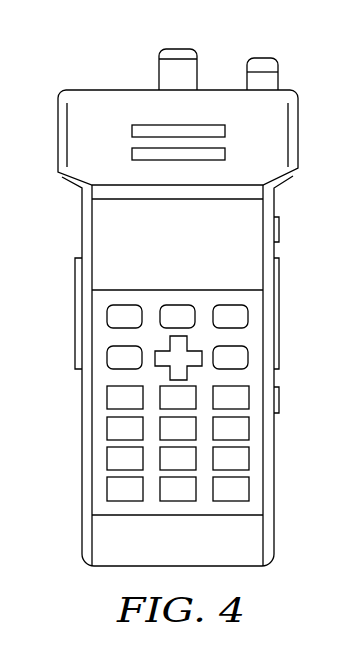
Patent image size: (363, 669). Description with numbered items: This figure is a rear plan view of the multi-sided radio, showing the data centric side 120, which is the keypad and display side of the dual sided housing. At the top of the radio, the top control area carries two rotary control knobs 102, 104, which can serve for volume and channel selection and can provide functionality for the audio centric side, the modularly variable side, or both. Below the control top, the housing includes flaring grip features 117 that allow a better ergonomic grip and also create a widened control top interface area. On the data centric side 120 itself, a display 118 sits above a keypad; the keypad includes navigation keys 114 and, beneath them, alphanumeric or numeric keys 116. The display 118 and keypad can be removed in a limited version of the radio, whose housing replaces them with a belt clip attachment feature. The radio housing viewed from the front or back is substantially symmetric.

The rotary control knob 102 is at (262, 58).
The rotary control knob 104 is at (170, 49).
The navigation keys 114 is at (107, 357).
The alphanumeric or numeric keys 116 is at (107, 428).
The flaring grip features 117 is at (285, 178).
The display 118 is at (98, 240).
The data centric side 120 is at (165, 552).